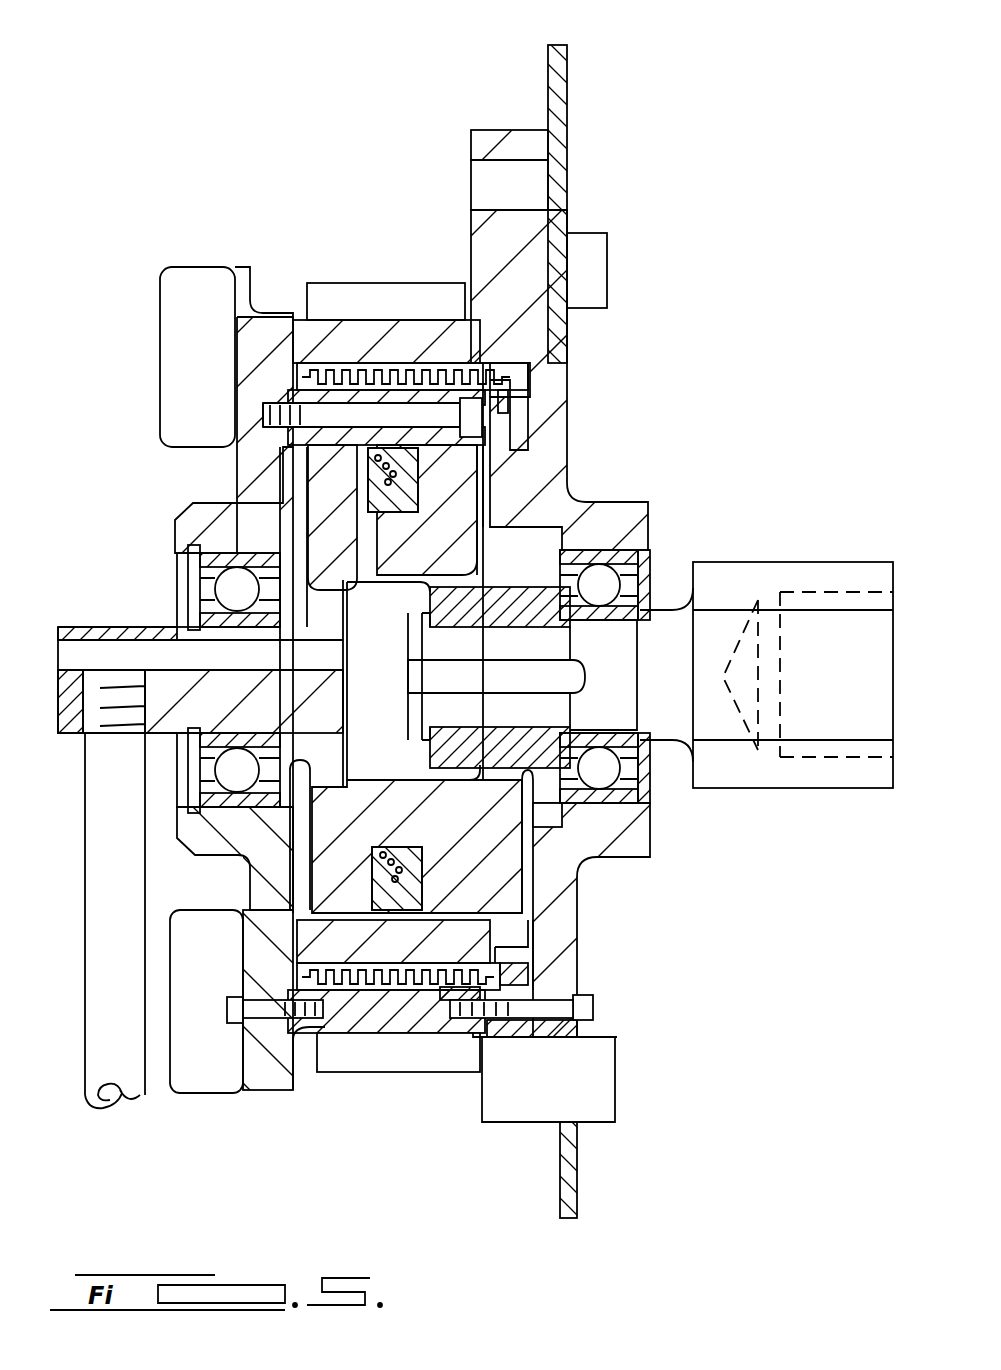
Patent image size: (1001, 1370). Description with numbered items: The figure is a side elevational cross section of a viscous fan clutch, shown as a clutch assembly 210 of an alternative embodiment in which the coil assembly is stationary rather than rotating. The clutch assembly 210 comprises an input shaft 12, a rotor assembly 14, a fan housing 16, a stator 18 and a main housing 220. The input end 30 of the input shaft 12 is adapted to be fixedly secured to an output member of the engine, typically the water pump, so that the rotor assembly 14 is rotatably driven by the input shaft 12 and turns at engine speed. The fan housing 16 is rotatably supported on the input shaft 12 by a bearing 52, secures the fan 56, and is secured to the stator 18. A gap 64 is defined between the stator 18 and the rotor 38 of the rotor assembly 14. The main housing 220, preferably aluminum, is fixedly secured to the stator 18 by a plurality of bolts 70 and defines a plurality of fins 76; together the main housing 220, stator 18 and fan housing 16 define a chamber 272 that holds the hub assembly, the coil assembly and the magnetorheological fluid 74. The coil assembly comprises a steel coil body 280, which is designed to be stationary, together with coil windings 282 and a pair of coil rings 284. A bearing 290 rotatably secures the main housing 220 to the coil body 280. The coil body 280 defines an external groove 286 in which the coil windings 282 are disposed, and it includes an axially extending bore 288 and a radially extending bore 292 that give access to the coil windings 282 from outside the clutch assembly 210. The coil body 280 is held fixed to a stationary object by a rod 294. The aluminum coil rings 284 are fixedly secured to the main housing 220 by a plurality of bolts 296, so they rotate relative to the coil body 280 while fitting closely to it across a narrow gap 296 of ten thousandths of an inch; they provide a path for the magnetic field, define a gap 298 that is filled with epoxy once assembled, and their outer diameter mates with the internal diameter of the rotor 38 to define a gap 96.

The clutch assembly 210 is at (780, 75).
The fan 56 is at (570, 72).
The fan housing 16 is at (550, 400).
The rotor assembly 14 is at (515, 917).
The magnetorheological fluid 74 is at (527, 383).
The bearing 52 is at (603, 588).
The coil body 280 is at (446, 805).
The input end 30 is at (820, 580).
The input shaft 12 is at (870, 542).
The axially extending bore 288 is at (95, 655).
The bearing 290 is at (235, 590).
The radially extending bore 292 is at (365, 548).
The external groove 286 is at (372, 495).
The coil windings 282 is at (415, 872).
The chamber 272 is at (400, 620).
The gap 298 is at (396, 440).
The gap 96 is at (308, 375).
The rotor 38 is at (356, 992).
The bolts 296 is at (346, 415).
The gap 64 is at (432, 1000).
The stator 18 is at (386, 1030).
The main housing 220 is at (258, 1028).
The bolts 70 is at (228, 1005).
The fins 76 is at (197, 1080).
The coil rings 284 is at (330, 935).
The rod 294 is at (112, 1100).